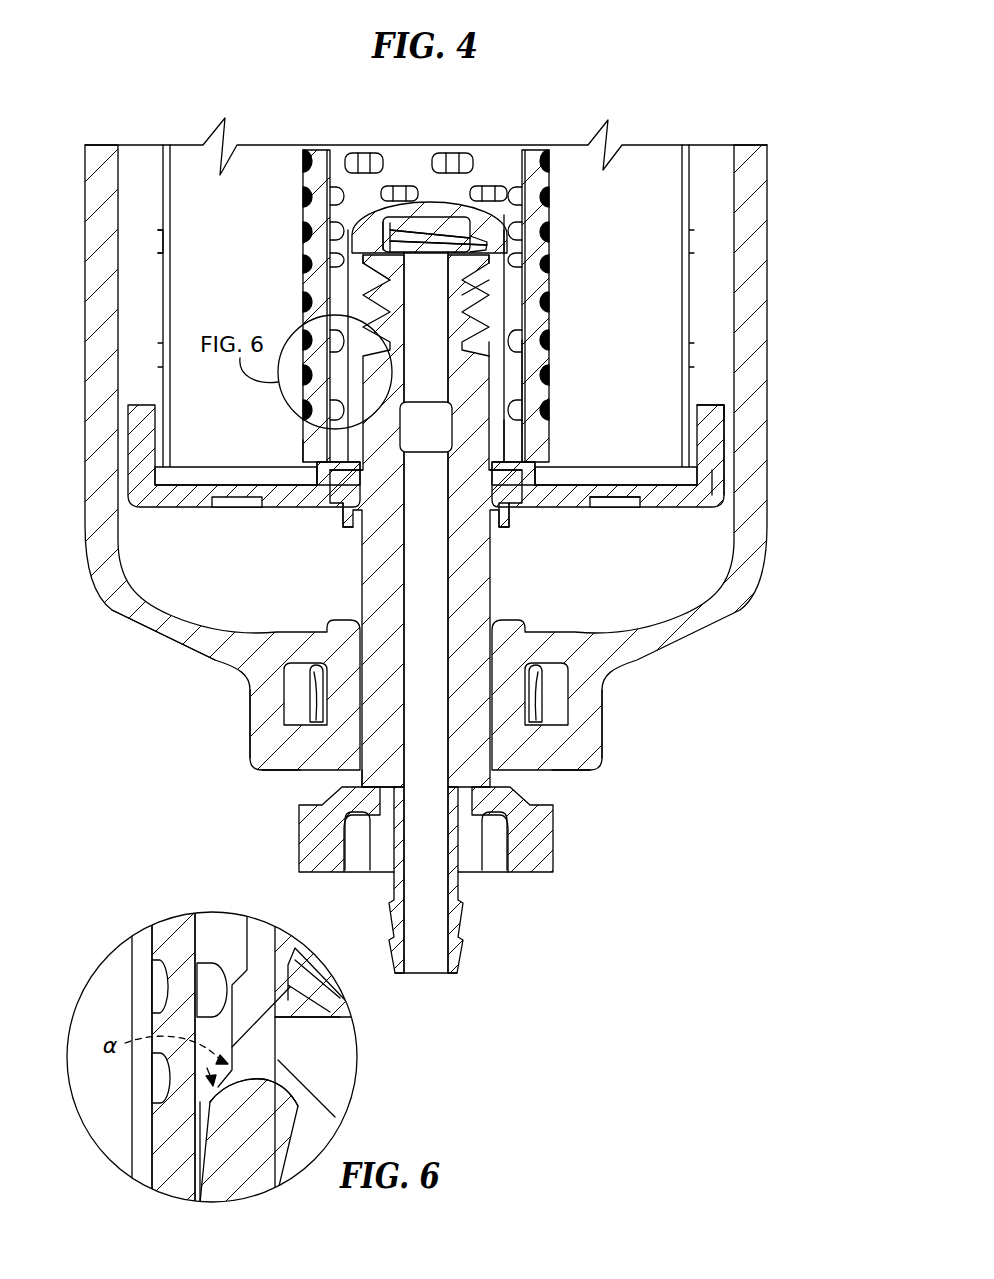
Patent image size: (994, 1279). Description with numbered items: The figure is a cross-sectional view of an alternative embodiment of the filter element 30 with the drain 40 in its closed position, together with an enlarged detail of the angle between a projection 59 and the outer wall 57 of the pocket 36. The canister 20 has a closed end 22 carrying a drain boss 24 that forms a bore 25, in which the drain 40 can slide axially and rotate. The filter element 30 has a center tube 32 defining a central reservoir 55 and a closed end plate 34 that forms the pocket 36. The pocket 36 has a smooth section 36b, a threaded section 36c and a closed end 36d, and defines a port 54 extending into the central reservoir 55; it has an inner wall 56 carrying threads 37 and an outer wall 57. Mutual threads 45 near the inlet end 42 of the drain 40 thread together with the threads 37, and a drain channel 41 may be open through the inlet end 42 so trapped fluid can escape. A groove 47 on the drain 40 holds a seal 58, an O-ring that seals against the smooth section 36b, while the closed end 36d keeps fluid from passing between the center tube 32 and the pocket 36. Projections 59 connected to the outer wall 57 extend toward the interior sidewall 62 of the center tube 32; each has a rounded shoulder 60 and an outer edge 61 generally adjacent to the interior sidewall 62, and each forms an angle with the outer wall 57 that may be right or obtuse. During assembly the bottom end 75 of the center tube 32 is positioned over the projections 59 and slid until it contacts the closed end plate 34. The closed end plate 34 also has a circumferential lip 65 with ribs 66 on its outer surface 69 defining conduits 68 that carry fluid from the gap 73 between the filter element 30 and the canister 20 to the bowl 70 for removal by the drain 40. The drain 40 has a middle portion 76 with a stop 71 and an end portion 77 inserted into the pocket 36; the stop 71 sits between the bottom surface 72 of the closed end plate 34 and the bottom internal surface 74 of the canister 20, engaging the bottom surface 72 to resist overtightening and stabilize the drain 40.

In FIG. 4, the canister 20 is at (765, 212).
In FIG. 4, the closed end 22 is at (232, 668).
In FIG. 4, the drain boss 24 is at (248, 727).
In FIG. 4, the bore 25 is at (567, 750).
In FIG. 4, the filter element 30 is at (158, 223).
In FIG. 4, the center tube 32 is at (548, 152).
In FIG. 4, the closed end plate 34 is at (284, 507).
In FIG. 4, the pocket 36 is at (493, 200).
In FIG. 4, the smooth section 36b is at (518, 372).
In FIG. 4, the threaded section 36c is at (490, 292).
In FIG. 4, the closed end 36d is at (395, 215).
In FIG. 4, the threads 37 is at (492, 262).
In FIG. 4, the drain 40 is at (492, 777).
In FIG. 4, the drain channel 41 is at (372, 787).
In FIG. 4, the inlet end 42 is at (404, 165).
In FIG. 4, the mutual threads 45 is at (362, 270).
In FIG. 4, the groove 47 is at (505, 508).
In FIG. 4, the port 54 is at (380, 228).
In FIG. 4, the central reservoir 55 is at (428, 148).
In FIG. 4, the inner wall 56 is at (505, 214).
In FIG. 4, the outer wall 57 is at (345, 248).
In FIG. 6, the outer wall 57 is at (236, 1028).
In FIG. 4, the seal 58 is at (345, 498).
In FIG. 4, the projections 59 is at (520, 470).
In FIG. 6, the projections 59 is at (298, 1106).
In FIG. 4, the rounded shoulder 60 is at (510, 442).
In FIG. 4, the outer edge 61 is at (455, 465).
In FIG. 4, the interior sidewall 62 is at (528, 352).
In FIG. 4, the circumferential lip 65 is at (712, 473).
In FIG. 4, the ribs 66 is at (722, 443).
In FIG. 4, the conduits 68 is at (125, 430).
In FIG. 4, the outer surface 69 is at (720, 418).
In FIG. 4, the bowl 70 is at (652, 592).
In FIG. 4, the stop 71 is at (348, 530).
In FIG. 4, the bottom surface 72 is at (672, 508).
In FIG. 4, the gap 73 is at (165, 314).
In FIG. 4, the bottom internal surface 74 is at (222, 628).
In FIG. 4, the bottom end 75 is at (312, 450).
In FIG. 4, the middle portion 76 is at (470, 588).
In FIG. 4, the end portion 77 is at (462, 205).